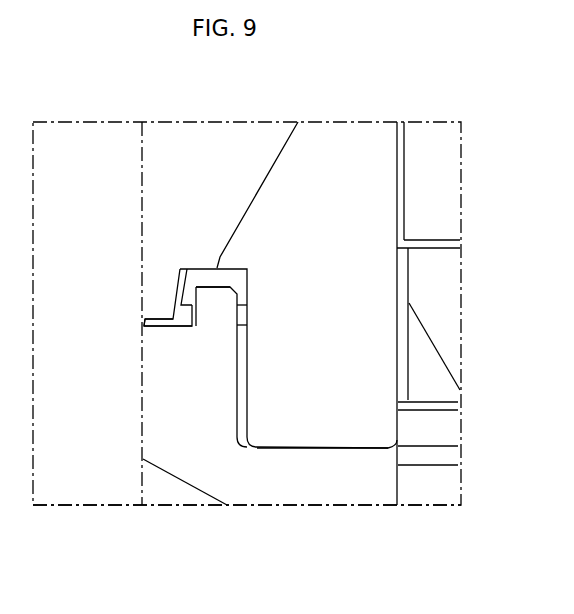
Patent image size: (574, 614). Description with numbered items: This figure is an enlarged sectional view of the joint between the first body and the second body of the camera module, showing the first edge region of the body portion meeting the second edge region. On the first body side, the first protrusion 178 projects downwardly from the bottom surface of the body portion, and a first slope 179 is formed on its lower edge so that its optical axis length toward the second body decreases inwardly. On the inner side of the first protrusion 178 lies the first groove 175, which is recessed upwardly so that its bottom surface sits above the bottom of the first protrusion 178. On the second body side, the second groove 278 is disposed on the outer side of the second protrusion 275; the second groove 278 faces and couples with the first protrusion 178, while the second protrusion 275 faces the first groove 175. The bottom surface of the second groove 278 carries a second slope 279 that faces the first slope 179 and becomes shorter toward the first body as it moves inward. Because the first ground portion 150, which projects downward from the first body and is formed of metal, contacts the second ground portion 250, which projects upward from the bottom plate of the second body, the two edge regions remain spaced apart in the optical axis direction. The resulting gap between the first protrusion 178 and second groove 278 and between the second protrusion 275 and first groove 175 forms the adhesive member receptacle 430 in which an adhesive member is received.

The first groove 175 is at (225, 268).
The adhesive member receptacle 430 is at (202, 275).
The first protrusion 178 is at (112, 258).
The first slope 179 is at (103, 296).
The second slope 279 is at (112, 331).
The second groove 278 is at (130, 363).
The second protrusion 275 is at (149, 381).
The first ground portion 150 is at (345, 400).
The second ground portion 250 is at (330, 477).